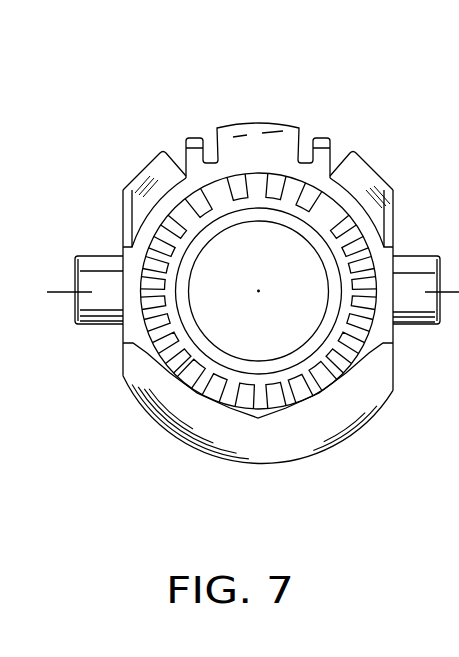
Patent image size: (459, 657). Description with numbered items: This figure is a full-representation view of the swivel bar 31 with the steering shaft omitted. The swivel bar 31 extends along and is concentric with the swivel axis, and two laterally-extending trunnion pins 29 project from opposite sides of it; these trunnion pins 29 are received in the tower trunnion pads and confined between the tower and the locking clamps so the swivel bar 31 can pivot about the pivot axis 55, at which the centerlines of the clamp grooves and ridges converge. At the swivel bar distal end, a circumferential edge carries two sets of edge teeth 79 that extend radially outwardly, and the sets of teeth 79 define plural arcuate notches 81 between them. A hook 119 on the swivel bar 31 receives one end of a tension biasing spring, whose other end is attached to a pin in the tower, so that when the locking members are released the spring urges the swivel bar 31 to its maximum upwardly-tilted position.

The swivel bar 31 is at (137, 436).
The trunnion pins 29 is at (97, 256).
The hook 119 is at (198, 138).
The pivot axis 55 is at (64, 256).
The edge teeth 79 is at (265, 190).
The arcuate notches 81 is at (394, 254).